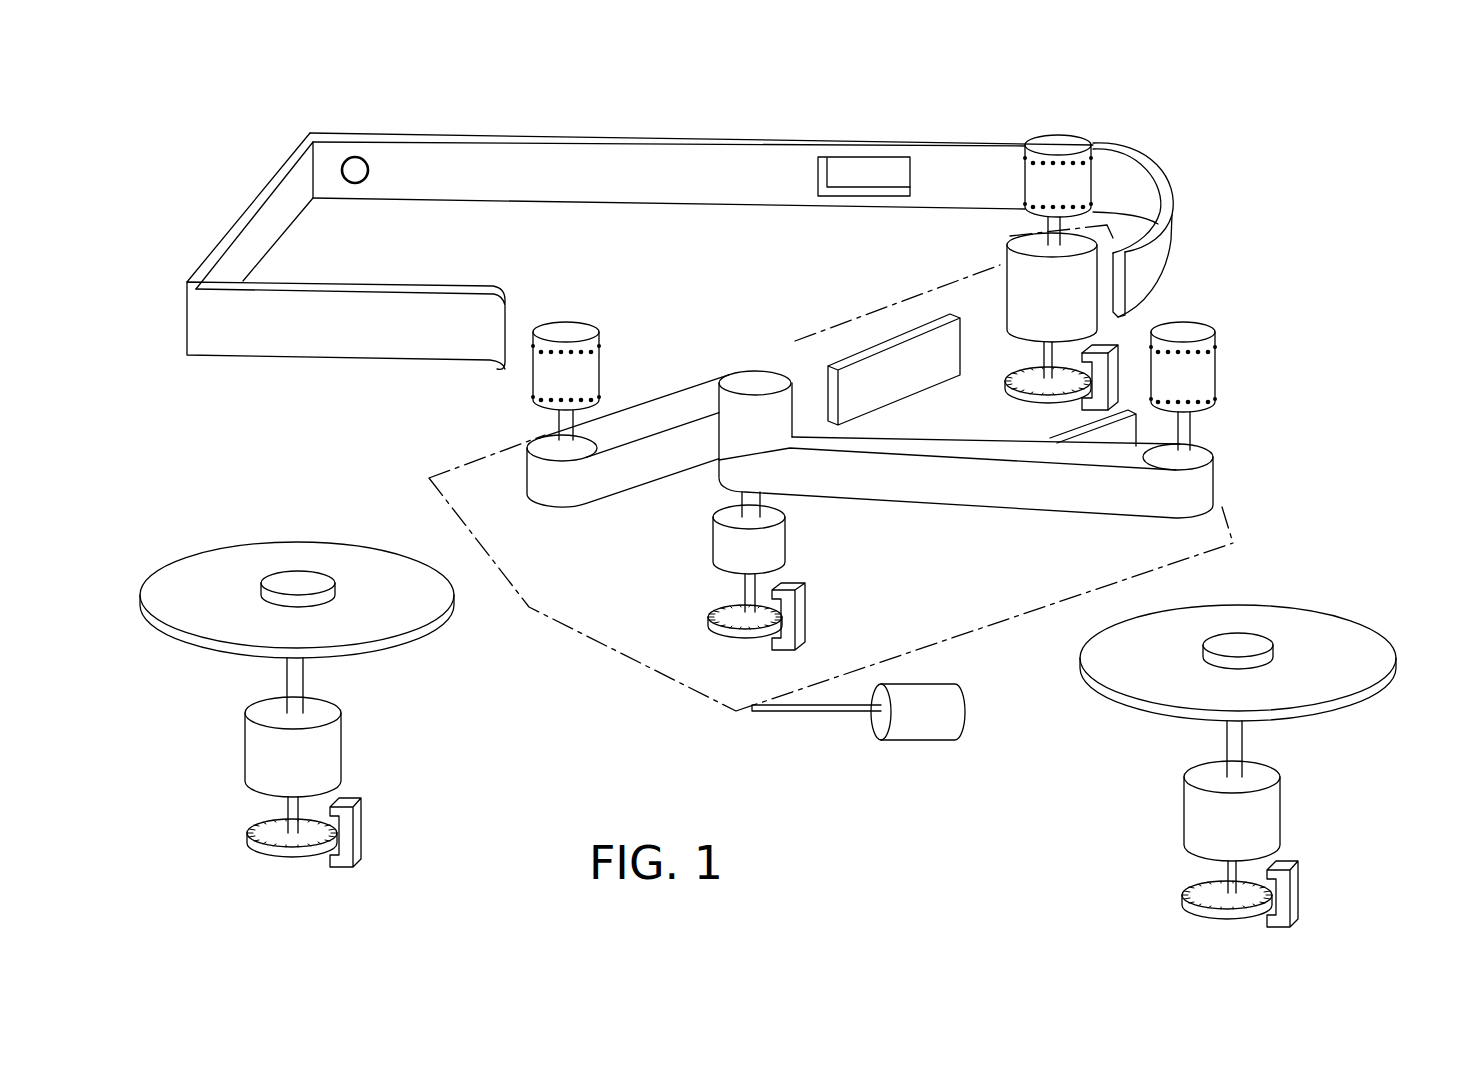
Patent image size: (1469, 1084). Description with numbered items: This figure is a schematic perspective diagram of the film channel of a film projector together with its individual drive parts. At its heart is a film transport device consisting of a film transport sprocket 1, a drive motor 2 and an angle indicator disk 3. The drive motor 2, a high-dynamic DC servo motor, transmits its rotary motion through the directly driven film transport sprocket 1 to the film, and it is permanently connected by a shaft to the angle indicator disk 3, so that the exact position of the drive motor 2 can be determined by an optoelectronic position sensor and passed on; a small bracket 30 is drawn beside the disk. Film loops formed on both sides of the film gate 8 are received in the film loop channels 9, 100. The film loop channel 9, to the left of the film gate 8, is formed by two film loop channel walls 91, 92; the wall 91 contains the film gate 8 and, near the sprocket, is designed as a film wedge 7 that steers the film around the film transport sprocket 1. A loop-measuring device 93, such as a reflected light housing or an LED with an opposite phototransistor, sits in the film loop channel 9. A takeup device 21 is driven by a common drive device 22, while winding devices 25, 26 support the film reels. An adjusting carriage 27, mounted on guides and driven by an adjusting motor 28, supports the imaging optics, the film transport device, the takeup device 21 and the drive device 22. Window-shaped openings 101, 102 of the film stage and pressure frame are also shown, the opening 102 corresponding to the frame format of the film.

The film transport sprocket 1 is at (1035, 182).
The drive motor 2 is at (1012, 293).
The angle indicator disk 3 is at (1050, 392).
The film wedge 7 is at (1154, 182).
The film gate 8 is at (867, 170).
The film loop channel 9 is at (477, 255).
The takeup device 21 is at (1208, 372).
The drive device 22 is at (776, 552).
The winding device 25 is at (436, 610).
The winding device 26 is at (1320, 628).
The adjusting carriage 27 is at (629, 646).
The adjusting motor 28 is at (930, 728).
The sensor bracket 30 is at (1117, 357).
The film loop channel wall 91 is at (459, 152).
The film loop channel wall 92 is at (300, 348).
The loop-measuring device 93 is at (358, 158).
The film loop channel 100 is at (870, 486).
The window-shaped opening 101 is at (863, 373).
The window-shaped opening 102 is at (1116, 432).